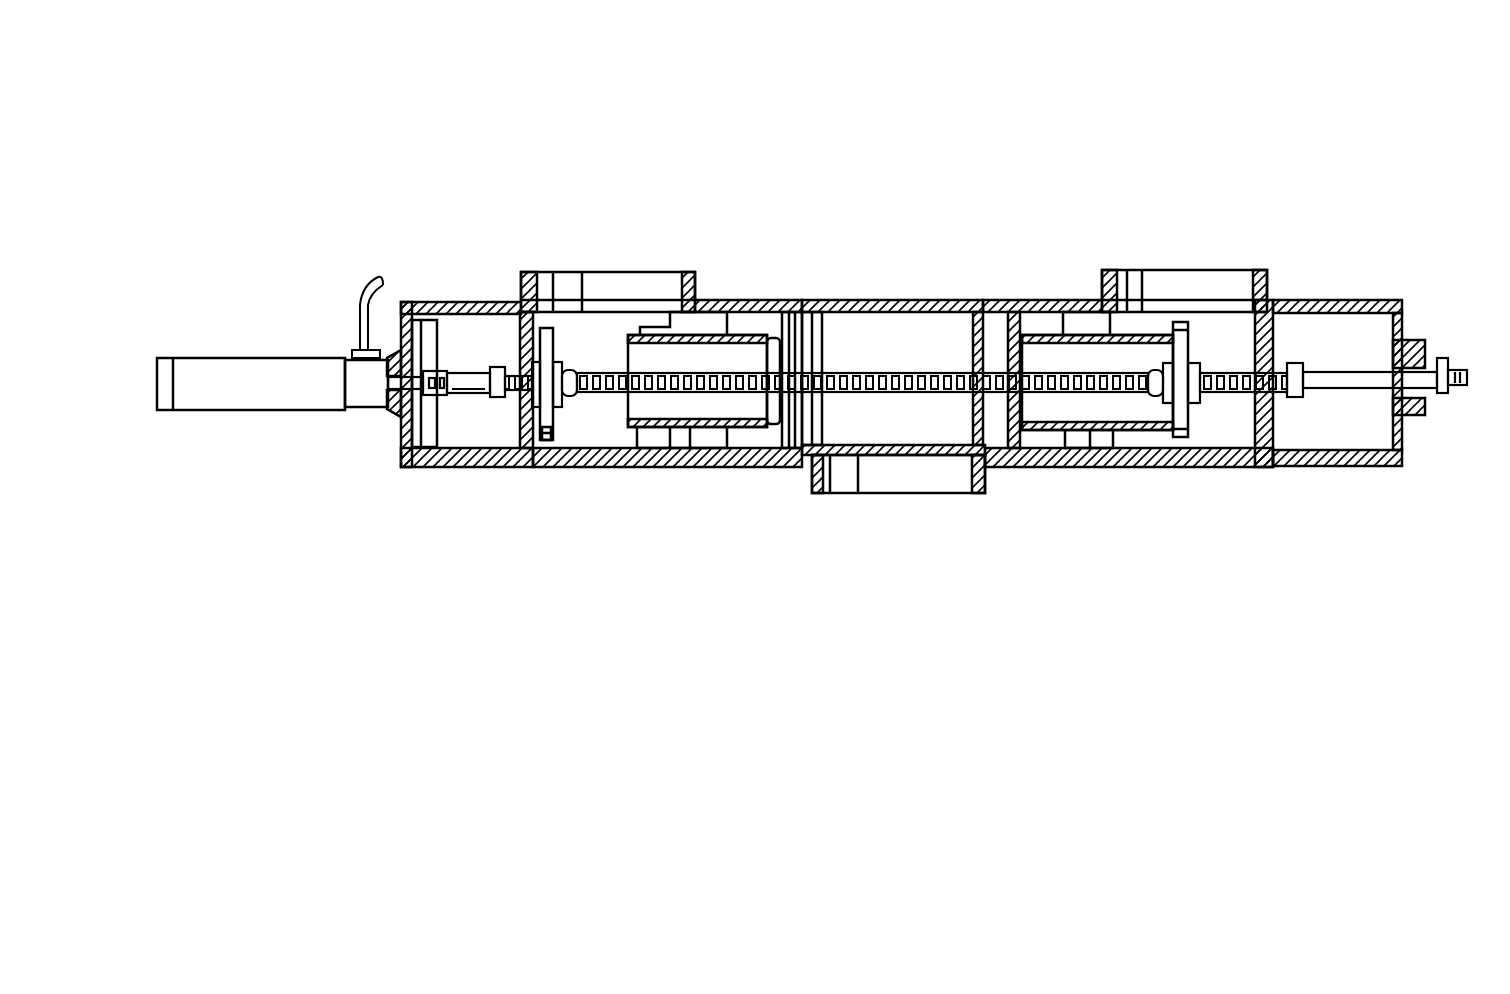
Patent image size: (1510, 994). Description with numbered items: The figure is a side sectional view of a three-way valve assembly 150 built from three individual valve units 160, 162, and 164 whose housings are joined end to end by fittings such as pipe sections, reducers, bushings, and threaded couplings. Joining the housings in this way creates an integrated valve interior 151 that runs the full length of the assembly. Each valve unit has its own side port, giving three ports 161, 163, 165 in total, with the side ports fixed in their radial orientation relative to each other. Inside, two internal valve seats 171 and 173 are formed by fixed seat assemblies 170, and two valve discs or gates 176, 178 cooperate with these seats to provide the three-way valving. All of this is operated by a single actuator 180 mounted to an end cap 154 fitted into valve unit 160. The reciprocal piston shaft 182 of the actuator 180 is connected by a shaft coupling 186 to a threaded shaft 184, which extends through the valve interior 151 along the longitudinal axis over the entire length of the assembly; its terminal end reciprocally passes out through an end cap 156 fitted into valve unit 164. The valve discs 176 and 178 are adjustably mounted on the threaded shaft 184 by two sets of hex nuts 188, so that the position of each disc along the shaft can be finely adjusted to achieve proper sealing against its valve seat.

The valve assembly 150 is at (924, 168).
The valve interior 151 is at (925, 364).
The end cap 154 is at (400, 433).
The end cap 156 is at (1410, 334).
The valve unit 160 is at (630, 457).
The port 161 is at (626, 287).
The valve unit 162 is at (901, 300).
The port 163 is at (913, 480).
The valve unit 164 is at (1195, 461).
The port 165 is at (1188, 287).
The fixed seat assembly 170 is at (703, 333).
The valve seat 171 is at (620, 357).
The valve seat 173 is at (1152, 357).
The valve disc 176 is at (551, 343).
The valve disc 178 is at (1181, 351).
The actuator 180 is at (246, 350).
The piston shaft 182 is at (441, 338).
The threaded shaft 184 is at (877, 394).
The shaft coupling 186 is at (477, 385).
The hex nuts 188 is at (537, 393).